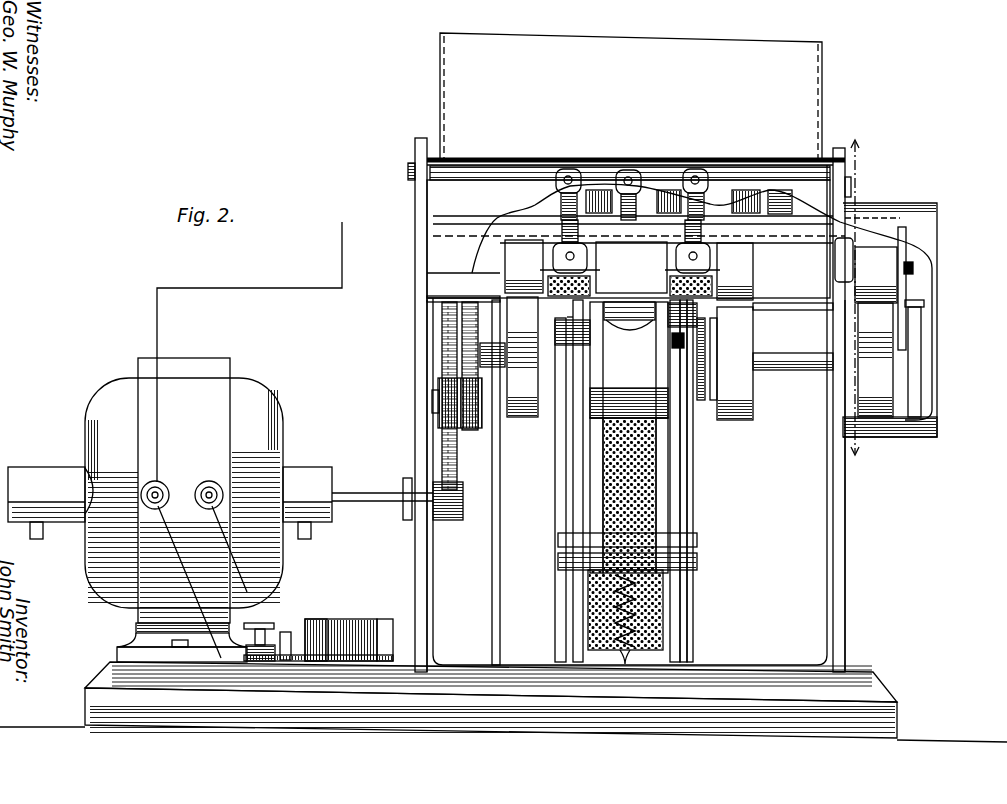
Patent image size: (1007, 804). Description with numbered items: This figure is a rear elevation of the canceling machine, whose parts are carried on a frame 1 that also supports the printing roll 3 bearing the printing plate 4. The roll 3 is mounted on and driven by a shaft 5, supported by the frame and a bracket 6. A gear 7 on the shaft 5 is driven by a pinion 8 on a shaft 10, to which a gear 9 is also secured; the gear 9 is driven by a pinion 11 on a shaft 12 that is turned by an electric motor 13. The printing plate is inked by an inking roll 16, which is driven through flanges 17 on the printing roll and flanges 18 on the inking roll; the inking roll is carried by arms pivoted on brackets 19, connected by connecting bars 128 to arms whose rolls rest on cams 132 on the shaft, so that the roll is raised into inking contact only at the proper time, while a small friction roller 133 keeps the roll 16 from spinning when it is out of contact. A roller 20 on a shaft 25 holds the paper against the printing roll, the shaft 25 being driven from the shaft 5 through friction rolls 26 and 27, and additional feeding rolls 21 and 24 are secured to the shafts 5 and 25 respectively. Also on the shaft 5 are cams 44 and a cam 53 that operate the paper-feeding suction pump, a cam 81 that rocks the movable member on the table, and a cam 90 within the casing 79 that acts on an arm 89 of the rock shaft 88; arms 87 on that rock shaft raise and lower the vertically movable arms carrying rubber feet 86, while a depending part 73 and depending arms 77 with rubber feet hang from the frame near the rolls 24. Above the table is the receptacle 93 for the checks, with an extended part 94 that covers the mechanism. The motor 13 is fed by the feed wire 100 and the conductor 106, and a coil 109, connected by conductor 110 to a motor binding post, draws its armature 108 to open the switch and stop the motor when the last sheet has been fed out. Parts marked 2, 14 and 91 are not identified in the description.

The frame 1 is at (420, 366).
The base 2 is at (860, 683).
The printing roll 3 is at (629, 360).
The printing plate 4 is at (628, 322).
The shaft 5 is at (808, 372).
The bracket 6 is at (498, 511).
The gear 7 is at (463, 289).
The pinion 8 is at (456, 441).
The gear 9 is at (459, 468).
The shaft 10 is at (440, 418).
The pinion 11 is at (463, 521).
The shaft 12 is at (368, 497).
The electric motor 13 is at (260, 400).
The guide rod 14 is at (562, 398).
The inking roller 16 is at (633, 508).
The flanges 17 is at (664, 407).
The flanges 18 is at (660, 481).
The brackets 19 is at (573, 623).
The roller 20 is at (631, 267).
The rolls 21 is at (530, 418).
The rolls 24 is at (764, 322).
The shaft 25 is at (766, 280).
The friction roll 26 is at (876, 405).
The friction roll 27 is at (873, 252).
The eccentric or cams 44 is at (730, 420).
The eccentric or cam 53 is at (712, 331).
The depending part 73 is at (648, 186).
The depending arms 77 is at (541, 185).
The casing 79 is at (937, 214).
The cam 81 is at (921, 408).
The foot 86 is at (583, 289).
The arms 87 is at (597, 187).
The rock shaft 88 is at (545, 215).
The arm 89 is at (906, 288).
The cam 90 is at (897, 381).
The stop 91 is at (913, 268).
The receptacle 93 is at (530, 49).
The extended part 94 is at (470, 175).
The feed wire 100 is at (279, 283).
The conductor 106 is at (364, 628).
The armature 108 is at (281, 637).
The coil 109 is at (330, 628).
The conductor 110 is at (182, 560).
The connecting bars 128 is at (560, 504).
The cams 132 is at (676, 343).
The friction roller 133 is at (673, 557).